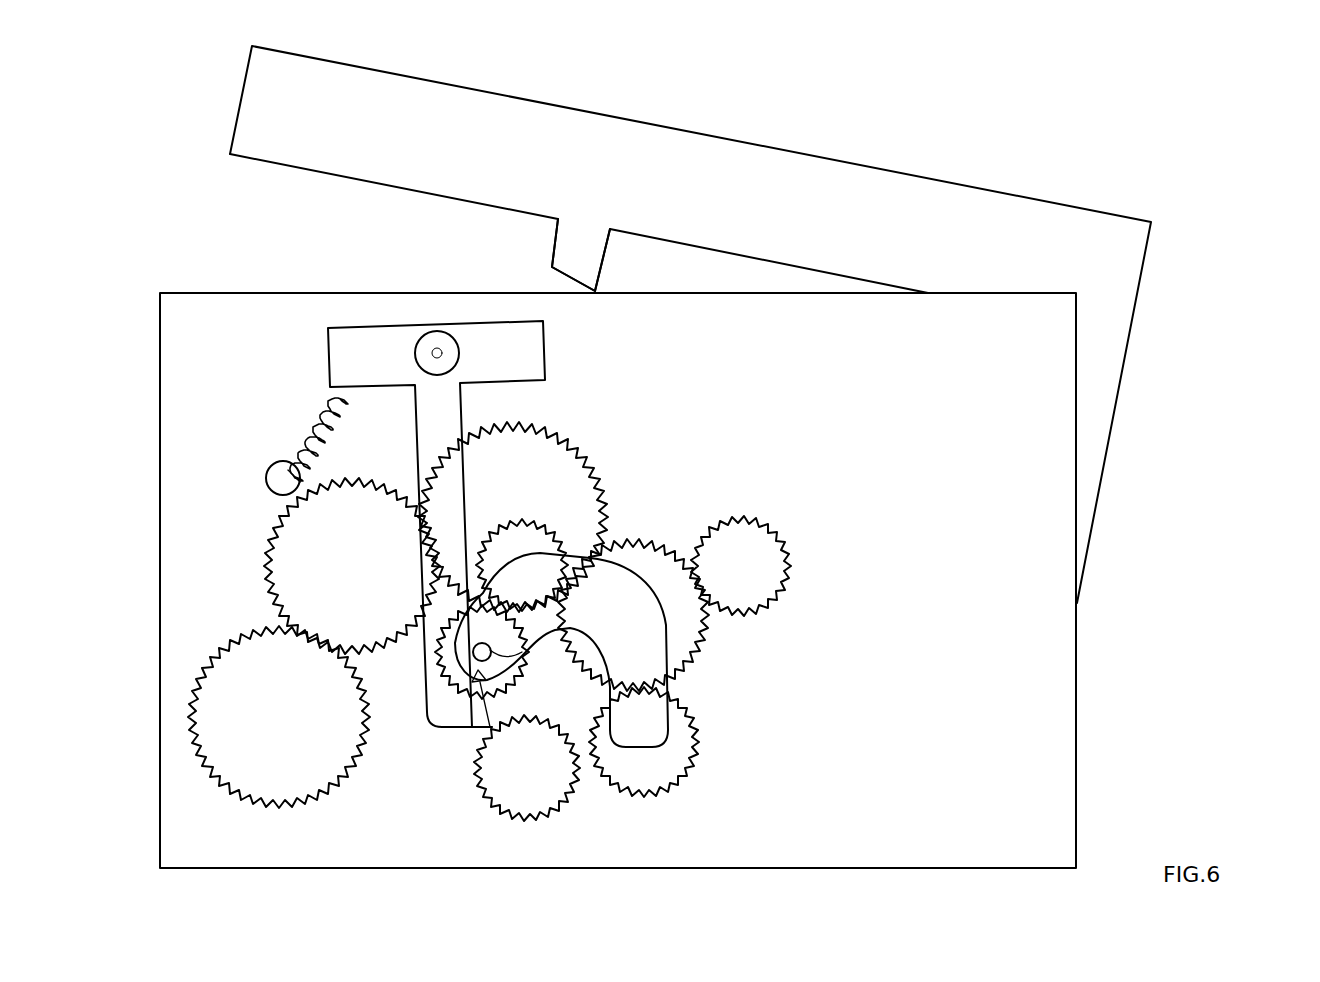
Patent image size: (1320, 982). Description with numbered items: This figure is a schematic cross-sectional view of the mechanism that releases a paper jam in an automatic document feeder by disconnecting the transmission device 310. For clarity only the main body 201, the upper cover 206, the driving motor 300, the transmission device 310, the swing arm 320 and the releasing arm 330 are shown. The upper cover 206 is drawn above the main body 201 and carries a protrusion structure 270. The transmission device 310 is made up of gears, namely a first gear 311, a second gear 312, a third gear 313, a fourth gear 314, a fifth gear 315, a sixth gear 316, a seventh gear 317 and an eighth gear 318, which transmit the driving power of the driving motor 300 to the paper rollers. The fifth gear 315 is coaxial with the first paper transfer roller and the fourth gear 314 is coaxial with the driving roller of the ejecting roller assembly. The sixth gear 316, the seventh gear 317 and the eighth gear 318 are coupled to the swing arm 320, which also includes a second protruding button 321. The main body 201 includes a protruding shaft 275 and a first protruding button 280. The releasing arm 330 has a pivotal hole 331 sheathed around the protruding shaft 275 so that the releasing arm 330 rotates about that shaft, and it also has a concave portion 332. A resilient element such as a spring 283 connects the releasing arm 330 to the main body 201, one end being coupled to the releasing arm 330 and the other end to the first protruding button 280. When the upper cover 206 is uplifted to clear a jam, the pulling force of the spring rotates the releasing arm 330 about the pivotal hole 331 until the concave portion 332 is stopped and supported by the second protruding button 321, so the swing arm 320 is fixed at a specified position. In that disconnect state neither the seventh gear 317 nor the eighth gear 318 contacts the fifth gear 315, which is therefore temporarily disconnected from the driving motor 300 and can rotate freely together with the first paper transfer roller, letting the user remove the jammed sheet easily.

The main body 201 is at (1078, 706).
The upper cover 206 is at (996, 189).
The protrusion structure 270 is at (575, 250).
The protruding shaft 275 is at (428, 362).
The first protruding button 280 is at (273, 465).
The spring 283 is at (313, 428).
The driving motor 300 is at (780, 542).
The transmission device 310 is at (703, 467).
The first gear 311 is at (710, 623).
The second gear 312 is at (573, 450).
The third gear 313 is at (270, 545).
The fourth gear 314 is at (250, 635).
The fifth gear 315 is at (567, 798).
The sixth gear 316 is at (552, 533).
The seventh gear 317 is at (484, 700).
The eighth gear 318 is at (693, 770).
The swing arm 320 is at (680, 653).
The second protruding button 321 is at (470, 652).
The releasing arm 330 is at (547, 352).
The pivotal hole 331 is at (427, 333).
The concave portion 332 is at (482, 773).